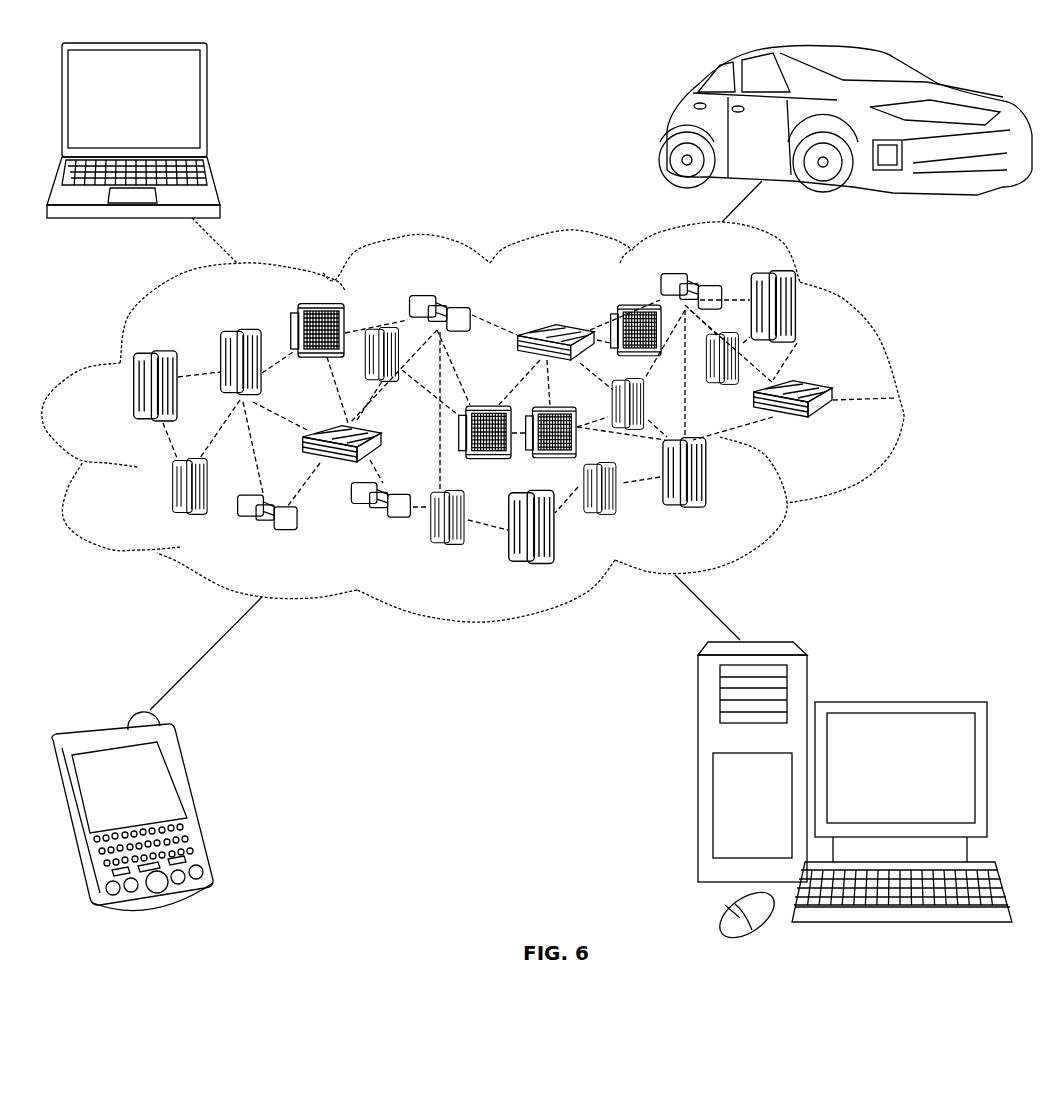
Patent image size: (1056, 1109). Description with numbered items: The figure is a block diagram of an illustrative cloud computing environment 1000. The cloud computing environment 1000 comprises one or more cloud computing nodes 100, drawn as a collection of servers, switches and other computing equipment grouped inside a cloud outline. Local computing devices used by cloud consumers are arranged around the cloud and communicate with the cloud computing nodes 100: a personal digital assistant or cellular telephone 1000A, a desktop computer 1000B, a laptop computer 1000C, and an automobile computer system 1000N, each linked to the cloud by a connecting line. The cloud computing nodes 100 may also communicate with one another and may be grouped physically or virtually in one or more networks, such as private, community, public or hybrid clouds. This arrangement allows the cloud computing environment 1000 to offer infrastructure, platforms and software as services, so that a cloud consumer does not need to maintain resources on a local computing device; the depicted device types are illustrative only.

The cloud computing environment 1000 is at (515, 422).
The cloud computing nodes 100 is at (921, 386).
The personal digital assistant (PDA) or cellular telephone 1000A is at (192, 800).
The desktop computer 1000B is at (898, 698).
The laptop computer 1000C is at (207, 108).
The automobile computer system 1000N is at (667, 127).